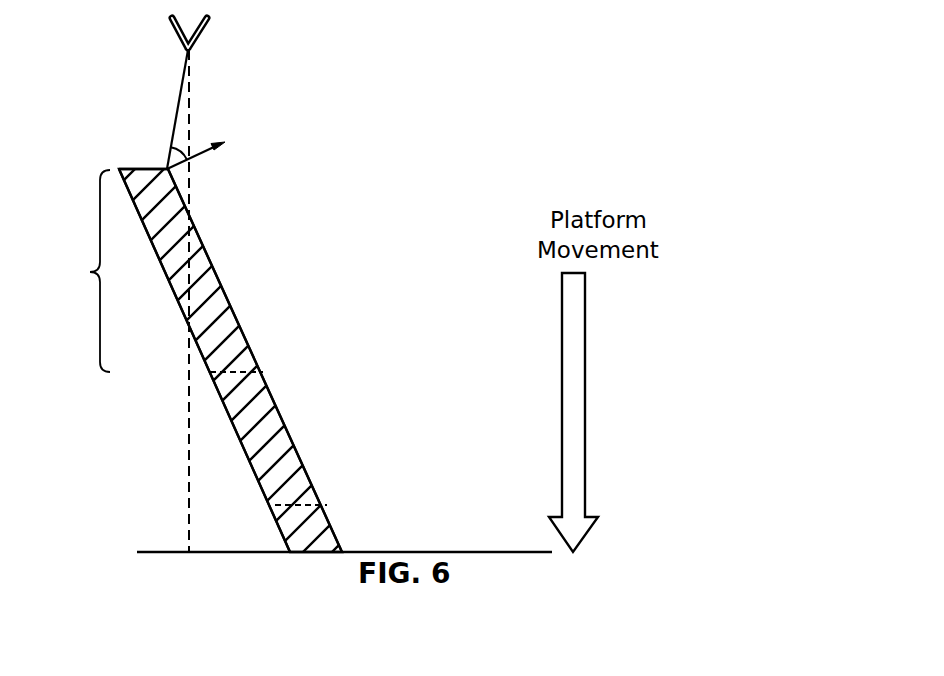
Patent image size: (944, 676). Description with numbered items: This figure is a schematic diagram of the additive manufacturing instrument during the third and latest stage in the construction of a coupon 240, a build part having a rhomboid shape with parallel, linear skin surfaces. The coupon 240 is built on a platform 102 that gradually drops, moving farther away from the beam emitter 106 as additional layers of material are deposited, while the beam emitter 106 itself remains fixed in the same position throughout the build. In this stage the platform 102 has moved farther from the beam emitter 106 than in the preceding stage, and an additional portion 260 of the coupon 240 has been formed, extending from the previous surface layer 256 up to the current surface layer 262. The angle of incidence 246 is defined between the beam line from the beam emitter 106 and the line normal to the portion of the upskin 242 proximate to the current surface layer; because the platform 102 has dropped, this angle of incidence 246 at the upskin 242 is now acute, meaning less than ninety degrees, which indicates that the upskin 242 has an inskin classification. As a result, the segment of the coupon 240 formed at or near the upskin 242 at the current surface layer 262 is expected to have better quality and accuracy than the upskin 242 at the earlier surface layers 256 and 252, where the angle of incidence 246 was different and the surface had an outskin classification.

The platform 102 is at (158, 551).
The beam emitter 106 is at (203, 32).
The coupon 240 is at (217, 307).
The upskin 242 is at (204, 250).
The angle of incidence 246 is at (188, 137).
The surface layer 252 is at (293, 497).
The previous surface layer 256 is at (228, 368).
The additional portion 260 is at (442, 338).
The current surface layer 262 is at (143, 168).